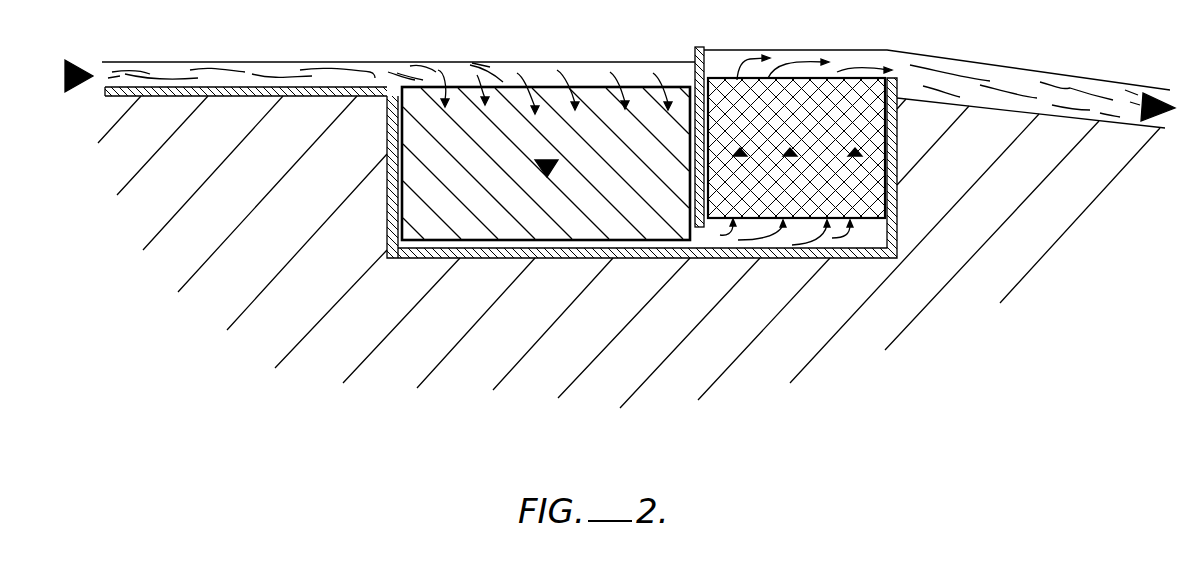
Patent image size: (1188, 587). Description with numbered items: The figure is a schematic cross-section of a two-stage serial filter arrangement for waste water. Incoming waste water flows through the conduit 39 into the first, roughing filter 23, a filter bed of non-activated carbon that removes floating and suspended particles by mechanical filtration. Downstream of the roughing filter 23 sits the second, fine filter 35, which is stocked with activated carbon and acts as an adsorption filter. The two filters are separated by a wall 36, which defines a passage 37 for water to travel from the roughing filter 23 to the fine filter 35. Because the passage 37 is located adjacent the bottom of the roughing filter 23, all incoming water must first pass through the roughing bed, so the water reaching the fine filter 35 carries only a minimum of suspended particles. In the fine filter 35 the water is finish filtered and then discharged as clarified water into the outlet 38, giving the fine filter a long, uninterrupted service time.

The roughing filter 23 is at (616, 230).
The fine filter 35 is at (873, 177).
The wall 36 is at (700, 46).
The passage 37 is at (695, 236).
The outlet 38 is at (1030, 80).
The conduit 39 is at (188, 70).